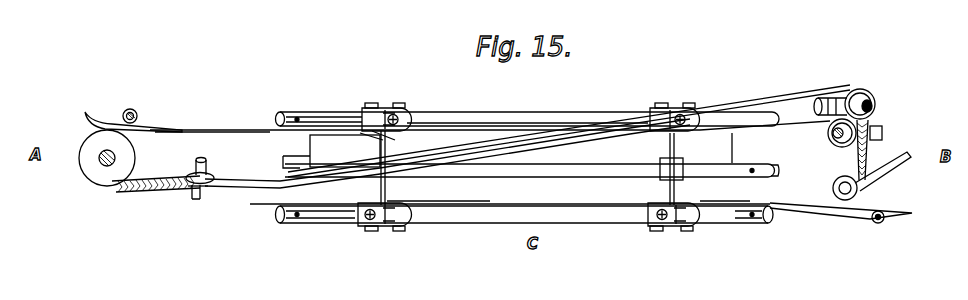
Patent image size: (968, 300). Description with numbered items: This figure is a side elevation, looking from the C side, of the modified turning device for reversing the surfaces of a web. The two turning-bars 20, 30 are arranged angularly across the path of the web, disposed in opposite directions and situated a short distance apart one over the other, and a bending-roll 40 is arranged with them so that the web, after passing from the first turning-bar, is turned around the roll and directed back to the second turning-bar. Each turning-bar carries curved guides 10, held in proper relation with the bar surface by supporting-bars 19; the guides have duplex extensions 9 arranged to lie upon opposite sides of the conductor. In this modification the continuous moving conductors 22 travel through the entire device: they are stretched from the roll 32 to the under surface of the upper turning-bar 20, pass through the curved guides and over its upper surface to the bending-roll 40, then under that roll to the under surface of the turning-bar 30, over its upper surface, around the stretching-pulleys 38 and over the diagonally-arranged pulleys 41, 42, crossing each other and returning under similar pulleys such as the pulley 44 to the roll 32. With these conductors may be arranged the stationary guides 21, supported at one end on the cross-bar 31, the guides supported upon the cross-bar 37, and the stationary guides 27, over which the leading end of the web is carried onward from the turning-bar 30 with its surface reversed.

The extensions of the guides 9 is at (318, 131).
The curved guides 10 is at (358, 131).
The supporting-bars 19 is at (488, 115).
The upper turning-bar 20 is at (455, 113).
The stationary guides 21 is at (207, 128).
The moving conductors 22 is at (150, 128).
The stationary guides 27 is at (808, 211).
The turning-bar 30 is at (560, 220).
The cross-bar 31 is at (137, 110).
The roll 32 is at (107, 158).
The cross-bar 37 is at (585, 168).
The stretching-pulleys 38 is at (840, 178).
The bending-roll 40 is at (312, 148).
The diagonally-arranged pulley 41 is at (882, 131).
The diagonally-arranged pulley 42 is at (876, 97).
The diagonally-arranged pulley 44 is at (208, 176).